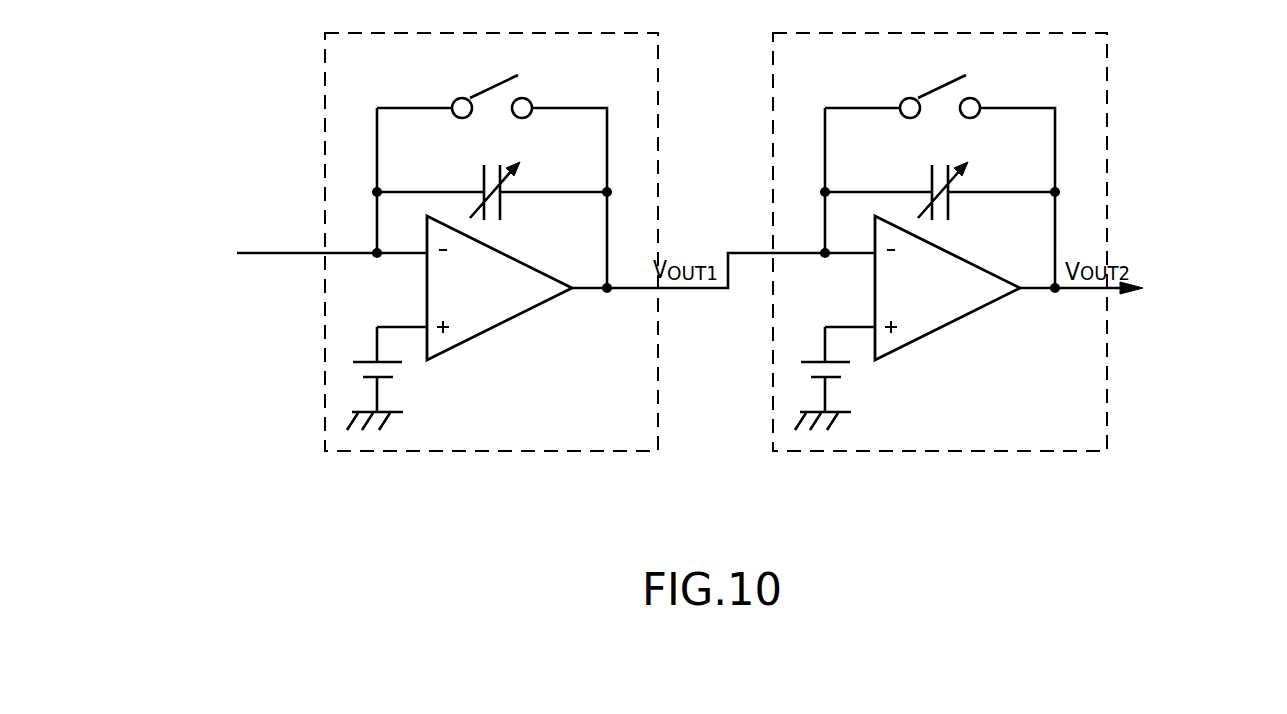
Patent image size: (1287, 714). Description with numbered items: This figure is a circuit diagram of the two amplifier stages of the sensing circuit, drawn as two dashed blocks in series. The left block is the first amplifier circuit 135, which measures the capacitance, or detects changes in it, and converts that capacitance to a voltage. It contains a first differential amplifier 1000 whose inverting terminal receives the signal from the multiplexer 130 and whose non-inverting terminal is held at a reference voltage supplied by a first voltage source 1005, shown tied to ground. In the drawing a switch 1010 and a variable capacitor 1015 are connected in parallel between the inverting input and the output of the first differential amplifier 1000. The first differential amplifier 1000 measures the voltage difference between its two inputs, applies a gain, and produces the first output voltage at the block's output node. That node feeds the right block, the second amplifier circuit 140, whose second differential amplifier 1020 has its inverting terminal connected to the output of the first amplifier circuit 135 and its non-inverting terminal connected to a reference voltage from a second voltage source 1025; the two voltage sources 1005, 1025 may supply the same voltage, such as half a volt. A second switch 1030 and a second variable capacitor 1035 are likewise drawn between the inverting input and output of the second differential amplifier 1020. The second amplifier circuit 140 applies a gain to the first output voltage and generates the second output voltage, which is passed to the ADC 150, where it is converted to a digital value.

The multiplexer 130 is at (284, 237).
The first amplifier circuit 135 is at (658, 73).
The second amplifier circuit 140 is at (977, 242).
The ADC 150 is at (1156, 291).
The first differential amplifier 1000 is at (507, 323).
The first voltage source 1005 is at (400, 363).
The first reset switch 1010 is at (493, 85).
The first variable feedback capacitor 1015 is at (480, 176).
The second differential amplifier 1020 is at (947, 297).
The second voltage source 1025 is at (853, 396).
The second reset switch 1030 is at (930, 80).
The second variable feedback capacitor 1035 is at (904, 189).